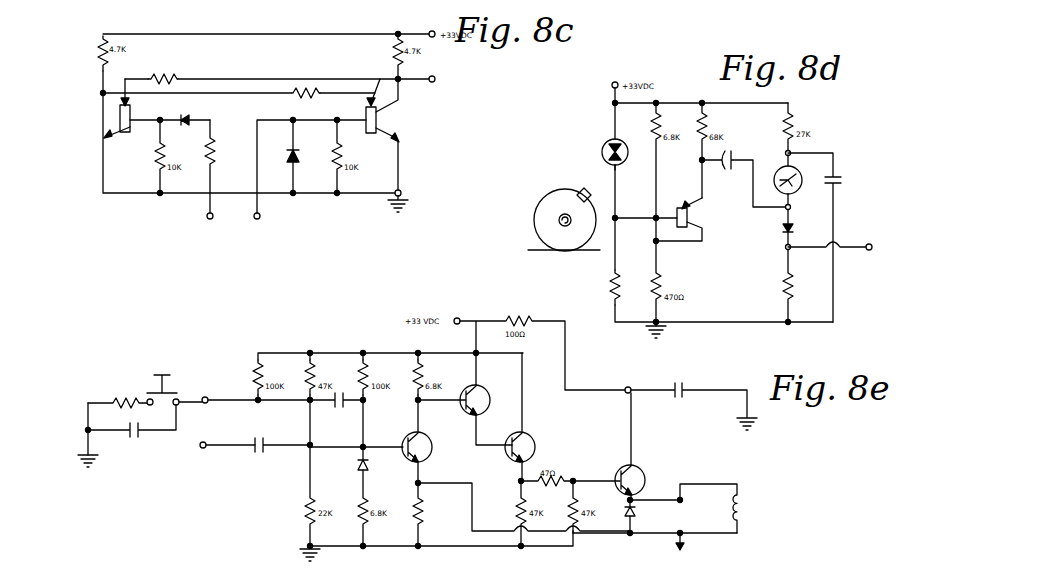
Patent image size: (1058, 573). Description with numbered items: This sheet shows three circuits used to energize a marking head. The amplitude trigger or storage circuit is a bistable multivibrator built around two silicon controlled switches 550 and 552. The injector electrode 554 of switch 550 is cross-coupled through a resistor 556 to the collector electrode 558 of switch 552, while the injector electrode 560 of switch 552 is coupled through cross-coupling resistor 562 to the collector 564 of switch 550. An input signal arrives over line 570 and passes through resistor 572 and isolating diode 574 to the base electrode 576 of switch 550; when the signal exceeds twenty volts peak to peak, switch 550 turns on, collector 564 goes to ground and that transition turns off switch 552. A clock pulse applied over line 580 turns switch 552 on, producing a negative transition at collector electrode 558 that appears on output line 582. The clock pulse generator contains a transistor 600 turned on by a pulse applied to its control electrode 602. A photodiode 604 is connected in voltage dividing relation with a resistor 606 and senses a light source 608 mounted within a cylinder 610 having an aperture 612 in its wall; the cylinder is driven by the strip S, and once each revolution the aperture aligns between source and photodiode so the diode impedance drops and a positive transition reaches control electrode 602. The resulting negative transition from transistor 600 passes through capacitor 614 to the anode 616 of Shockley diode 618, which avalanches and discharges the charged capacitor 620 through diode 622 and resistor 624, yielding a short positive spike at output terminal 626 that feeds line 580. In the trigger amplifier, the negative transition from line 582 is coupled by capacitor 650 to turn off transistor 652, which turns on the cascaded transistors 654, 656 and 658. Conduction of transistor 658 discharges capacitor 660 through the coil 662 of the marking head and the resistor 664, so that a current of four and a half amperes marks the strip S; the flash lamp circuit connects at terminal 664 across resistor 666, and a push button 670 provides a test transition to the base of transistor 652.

In FIG. 8c, the silicon controlled switch 550 is at (123, 133).
In FIG. 8c, the silicon controlled switch 552 is at (368, 134).
In FIG. 8c, the injector electrode 554 is at (132, 73).
In FIG. 8c, the resistor 556 is at (163, 76).
In FIG. 8c, the collector electrode 558 is at (399, 107).
In FIG. 8c, the injector electrode 560 is at (365, 83).
In FIG. 8c, the cross-coupling resistor 562 is at (291, 96).
In FIG. 8c, the collector 564 is at (119, 114).
In FIG. 8c, the line 570 is at (208, 206).
In FIG. 8c, the resistor 572 is at (212, 148).
In FIG. 8c, the isolating diode 574 is at (193, 112).
In FIG. 8c, the base electrode 576 is at (159, 121).
In FIG. 8c, the line 580 is at (260, 214).
In FIG. 8c, the output line 582 is at (447, 69).
In FIG. 8e, the output line 582 is at (230, 446).
In FIG. 8d, the transistor 600 is at (681, 208).
In FIG. 8d, the control electrode 602 is at (661, 217).
In FIG. 8d, the photodiode 604 is at (603, 152).
In FIG. 8d, the resistor 606 is at (612, 284).
In FIG. 8d, the light source 608 is at (565, 220).
In FIG. 8d, the cylinder 610 is at (597, 236).
In FIG. 8d, the aperture 612 is at (586, 189).
In FIG. 8d, the capacitor 614 is at (733, 152).
In FIG. 8d, the anode 616 is at (790, 210).
In FIG. 8d, the Shockley diode 618 is at (792, 176).
In FIG. 8d, the capacitor 620 is at (828, 237).
In FIG. 8d, the diode 622 is at (784, 247).
In FIG. 8d, the resistor 624 is at (785, 281).
In FIG. 8d, the output terminal 626 is at (830, 259).
In FIG. 8d, the strip S is at (546, 251).
In FIG. 8e, the capacitor 650 is at (261, 448).
In FIG. 8e, the transistor 652 is at (426, 441).
In FIG. 8e, the transistor 654 is at (486, 393).
In FIG. 8e, the transistor 656 is at (535, 436).
In FIG. 8e, the transistor 658 is at (622, 471).
In FIG. 8e, the capacitor 660 is at (679, 388).
In FIG. 8e, the coil 662 is at (741, 508).
In FIG. 8e, the terminal 664 is at (683, 553).
In FIG. 8e, the resistor 666 is at (414, 520).
In FIG. 8e, the push button 670 is at (166, 393).